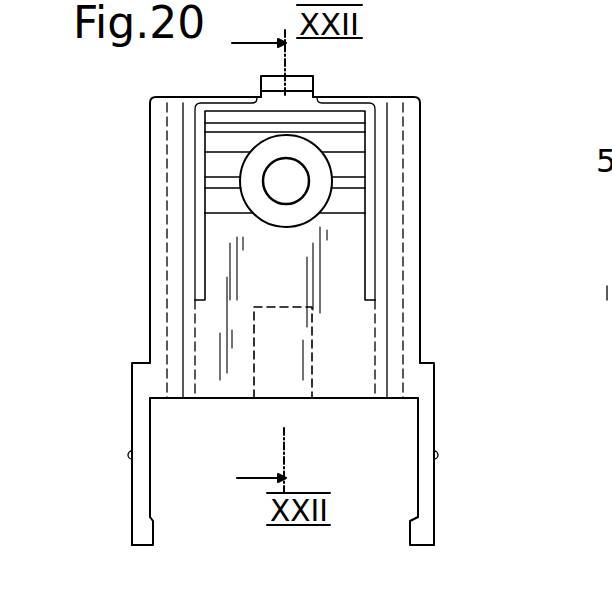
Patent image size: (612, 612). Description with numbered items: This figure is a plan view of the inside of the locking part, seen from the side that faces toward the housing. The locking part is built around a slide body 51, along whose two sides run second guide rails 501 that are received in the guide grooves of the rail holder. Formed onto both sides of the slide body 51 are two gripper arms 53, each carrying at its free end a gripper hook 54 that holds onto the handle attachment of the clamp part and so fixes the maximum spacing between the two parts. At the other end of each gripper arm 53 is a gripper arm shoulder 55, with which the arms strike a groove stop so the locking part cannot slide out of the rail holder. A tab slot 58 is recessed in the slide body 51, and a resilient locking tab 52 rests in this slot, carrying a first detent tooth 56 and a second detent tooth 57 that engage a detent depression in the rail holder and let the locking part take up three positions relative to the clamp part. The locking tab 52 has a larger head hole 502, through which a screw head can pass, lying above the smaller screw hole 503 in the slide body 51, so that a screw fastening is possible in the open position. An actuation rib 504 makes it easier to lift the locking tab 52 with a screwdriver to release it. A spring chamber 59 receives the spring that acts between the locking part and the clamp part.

The second guide rail 501 is at (133, 364).
The head hole 502 is at (253, 165).
The screw hole 503 is at (287, 185).
The actuation rib 504 is at (300, 86).
The slide body 51 is at (220, 347).
The locking tab 52 is at (257, 255).
The gripper arm 53 is at (138, 498).
The gripper hook 54 is at (138, 532).
The gripper arm shoulder 55 is at (435, 362).
The first detent tooth 56 is at (212, 183).
The second detent tooth 57 is at (355, 127).
The tab slot 58 is at (197, 234).
The spring chamber 59 is at (298, 380).